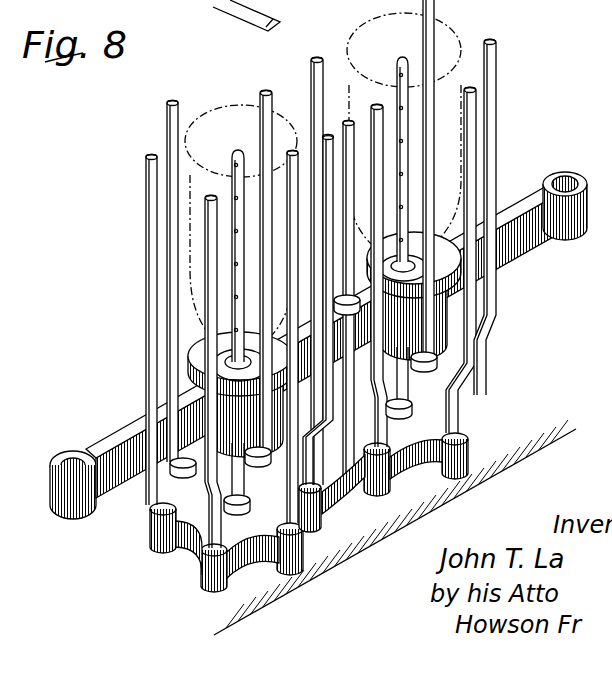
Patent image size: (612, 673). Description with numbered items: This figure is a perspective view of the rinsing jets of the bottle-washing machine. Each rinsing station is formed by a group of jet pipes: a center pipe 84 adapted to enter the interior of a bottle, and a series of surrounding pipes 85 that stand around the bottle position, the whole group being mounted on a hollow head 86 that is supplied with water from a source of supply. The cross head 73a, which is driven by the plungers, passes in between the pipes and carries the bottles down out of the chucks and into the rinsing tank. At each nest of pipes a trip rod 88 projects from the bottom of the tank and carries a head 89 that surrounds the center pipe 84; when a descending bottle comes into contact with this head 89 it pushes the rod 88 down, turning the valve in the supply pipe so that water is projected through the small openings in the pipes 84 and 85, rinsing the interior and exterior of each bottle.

The cross head 73a is at (120, 448).
The center pipe 84 is at (238, 153).
The jet pipes 85 is at (173, 128).
The hollow head 86 is at (309, 507).
The trip rod 88 is at (284, 456).
The head 89 is at (265, 370).